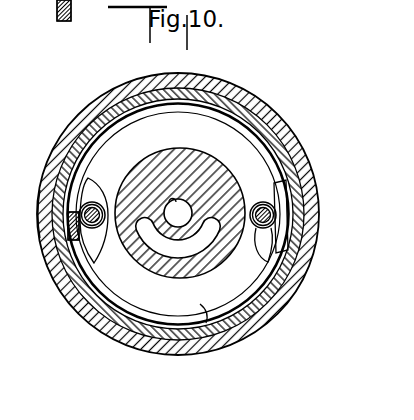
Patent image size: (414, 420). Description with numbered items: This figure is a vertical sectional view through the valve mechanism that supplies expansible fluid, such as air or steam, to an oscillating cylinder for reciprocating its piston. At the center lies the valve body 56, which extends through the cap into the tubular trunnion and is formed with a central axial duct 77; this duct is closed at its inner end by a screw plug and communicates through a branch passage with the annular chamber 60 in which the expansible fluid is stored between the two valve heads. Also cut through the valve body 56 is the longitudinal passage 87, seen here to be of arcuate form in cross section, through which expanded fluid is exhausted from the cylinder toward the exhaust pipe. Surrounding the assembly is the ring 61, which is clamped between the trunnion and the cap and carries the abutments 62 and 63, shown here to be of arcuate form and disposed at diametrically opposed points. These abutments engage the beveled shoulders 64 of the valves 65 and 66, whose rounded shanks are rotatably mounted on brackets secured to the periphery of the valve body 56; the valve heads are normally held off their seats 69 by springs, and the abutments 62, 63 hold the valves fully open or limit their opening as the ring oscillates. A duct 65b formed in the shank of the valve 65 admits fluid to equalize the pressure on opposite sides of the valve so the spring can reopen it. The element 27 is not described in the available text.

The member 27 is at (61, 22).
The valve body 56 is at (215, 157).
The axial duct 77 is at (180, 199).
The longitudinal passage 87 is at (167, 256).
The annular chamber 60 is at (207, 350).
The ring 61 is at (253, 295).
The valve 66 is at (290, 263).
The beveled shoulder 64 is at (75, 307).
The valve seat 69 is at (38, 207).
The abutment 62 is at (70, 227).
The abutment 63 is at (283, 229).
The valve 65 is at (78, 193).
The duct 65b is at (270, 211).